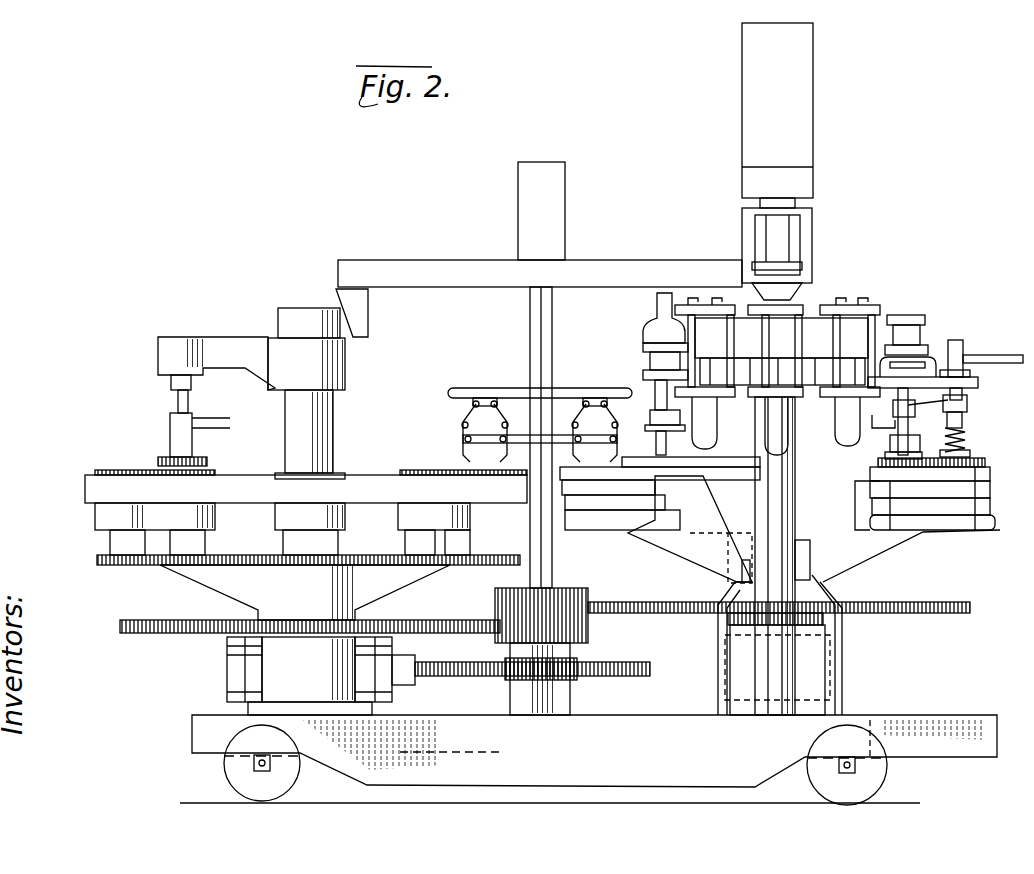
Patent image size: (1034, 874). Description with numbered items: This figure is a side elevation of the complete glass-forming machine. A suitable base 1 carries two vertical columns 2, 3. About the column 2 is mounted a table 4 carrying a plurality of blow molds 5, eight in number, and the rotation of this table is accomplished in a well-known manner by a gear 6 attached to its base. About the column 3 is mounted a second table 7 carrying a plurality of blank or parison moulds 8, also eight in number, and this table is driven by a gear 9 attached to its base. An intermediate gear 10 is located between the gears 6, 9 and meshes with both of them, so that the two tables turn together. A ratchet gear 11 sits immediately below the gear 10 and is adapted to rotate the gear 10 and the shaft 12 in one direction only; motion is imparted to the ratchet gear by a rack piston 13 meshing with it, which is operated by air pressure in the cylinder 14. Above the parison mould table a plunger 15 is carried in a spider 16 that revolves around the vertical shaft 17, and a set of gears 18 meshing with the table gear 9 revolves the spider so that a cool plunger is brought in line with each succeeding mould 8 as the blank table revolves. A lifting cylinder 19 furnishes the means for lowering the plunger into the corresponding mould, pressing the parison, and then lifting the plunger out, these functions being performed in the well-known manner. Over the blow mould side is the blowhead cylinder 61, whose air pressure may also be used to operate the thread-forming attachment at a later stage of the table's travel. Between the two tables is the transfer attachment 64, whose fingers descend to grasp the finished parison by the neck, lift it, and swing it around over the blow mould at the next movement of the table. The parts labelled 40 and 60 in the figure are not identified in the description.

The base 1 is at (638, 722).
The vertical column 2 is at (318, 430).
The vertical column 3 is at (798, 445).
The table 4 is at (165, 565).
The blow molds 5 is at (112, 512).
The gear 6 is at (170, 632).
The table 7 is at (848, 528).
The blank or parison moulds 8 is at (975, 530).
The gear 9 is at (665, 605).
The intermediate gear 10 is at (500, 592).
The ratchet gear 11 is at (555, 683).
The shaft 12 is at (542, 562).
The rack piston 13 is at (445, 678).
The cylinder 14 is at (232, 675).
The plunger 15 is at (773, 425).
The spider 16 is at (810, 330).
The vertical shaft 17 is at (790, 580).
The set of gears 18 is at (728, 622).
The lifting cylinder 19 is at (795, 127).
The lever 40 is at (888, 420).
The nozzle 60 is at (636, 458).
The blowhead cylinder 61 is at (172, 348).
The transfer attachment 64 is at (612, 400).